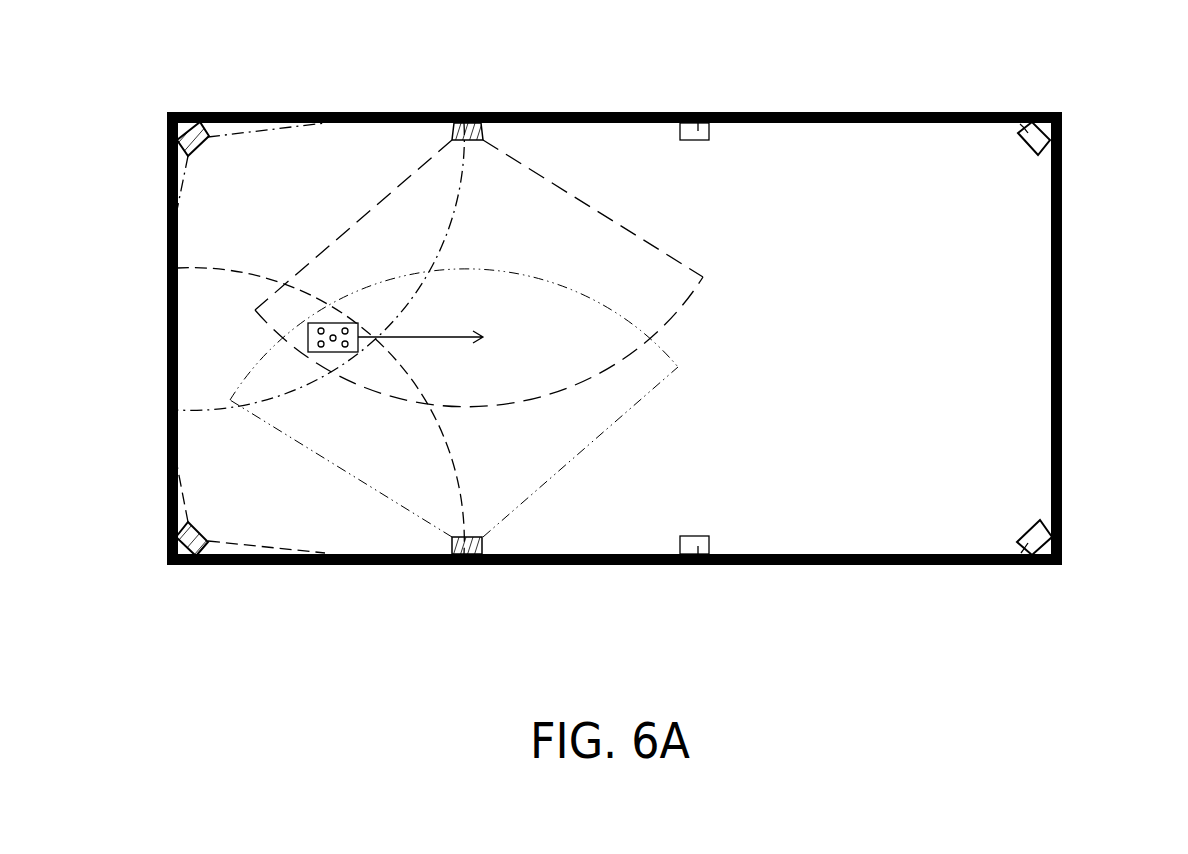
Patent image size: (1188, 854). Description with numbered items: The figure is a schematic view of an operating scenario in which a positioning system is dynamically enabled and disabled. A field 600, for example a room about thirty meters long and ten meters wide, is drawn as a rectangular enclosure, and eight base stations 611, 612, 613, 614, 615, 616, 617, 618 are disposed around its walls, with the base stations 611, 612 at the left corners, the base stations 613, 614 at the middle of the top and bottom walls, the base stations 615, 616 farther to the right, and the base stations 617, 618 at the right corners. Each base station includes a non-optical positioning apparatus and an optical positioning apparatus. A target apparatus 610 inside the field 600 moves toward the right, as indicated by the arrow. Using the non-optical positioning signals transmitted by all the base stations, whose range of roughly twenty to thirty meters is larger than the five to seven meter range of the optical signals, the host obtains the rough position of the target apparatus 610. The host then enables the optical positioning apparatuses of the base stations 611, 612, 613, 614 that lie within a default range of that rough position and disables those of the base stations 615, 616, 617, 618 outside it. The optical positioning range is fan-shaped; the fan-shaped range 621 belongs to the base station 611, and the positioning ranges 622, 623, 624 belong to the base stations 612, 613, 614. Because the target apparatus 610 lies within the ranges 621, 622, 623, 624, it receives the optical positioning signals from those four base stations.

The field 600 is at (1062, 342).
The target apparatus 610 is at (360, 325).
The base station 611 is at (211, 122).
The base station 612 is at (211, 566).
The base station 613 is at (462, 123).
The base station 614 is at (460, 565).
The base station 615 is at (695, 112).
The base station 616 is at (696, 565).
The base station 617 is at (1015, 112).
The base station 618 is at (1015, 565).
The fan-shaped range 621 is at (255, 131).
The positioning range 622 is at (257, 547).
The positioning range 623 is at (540, 175).
The positioning range 624 is at (538, 490).